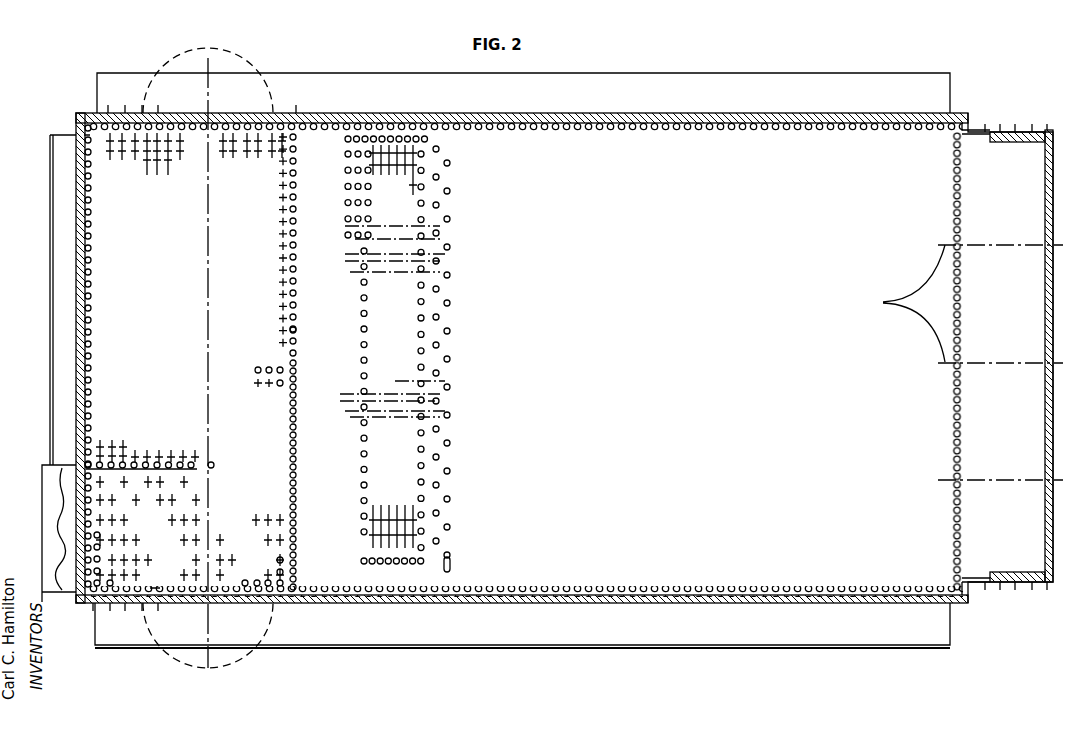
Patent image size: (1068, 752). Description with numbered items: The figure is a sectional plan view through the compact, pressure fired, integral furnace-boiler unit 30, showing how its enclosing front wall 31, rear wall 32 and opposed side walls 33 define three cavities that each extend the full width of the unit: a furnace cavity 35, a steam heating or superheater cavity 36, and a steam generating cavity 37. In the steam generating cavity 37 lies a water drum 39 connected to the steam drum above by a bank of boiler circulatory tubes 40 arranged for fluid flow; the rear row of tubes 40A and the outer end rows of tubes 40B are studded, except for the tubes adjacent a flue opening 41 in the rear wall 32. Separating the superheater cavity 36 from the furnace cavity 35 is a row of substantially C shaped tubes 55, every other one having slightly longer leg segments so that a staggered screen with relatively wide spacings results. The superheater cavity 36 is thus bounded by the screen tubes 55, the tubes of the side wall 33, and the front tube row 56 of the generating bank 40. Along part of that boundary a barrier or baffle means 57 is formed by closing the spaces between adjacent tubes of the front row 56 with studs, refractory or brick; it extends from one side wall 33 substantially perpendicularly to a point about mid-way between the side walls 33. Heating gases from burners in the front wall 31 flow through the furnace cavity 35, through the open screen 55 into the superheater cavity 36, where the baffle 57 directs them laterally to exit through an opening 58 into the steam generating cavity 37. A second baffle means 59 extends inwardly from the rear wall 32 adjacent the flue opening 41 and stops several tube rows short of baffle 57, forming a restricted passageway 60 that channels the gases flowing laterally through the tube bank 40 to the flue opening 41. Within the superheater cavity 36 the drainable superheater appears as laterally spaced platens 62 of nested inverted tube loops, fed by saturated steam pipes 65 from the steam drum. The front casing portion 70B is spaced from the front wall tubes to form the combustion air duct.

The integral furnace-boiler unit 30 is at (607, 652).
The front wall 31 is at (960, 414).
The rear wall 32 is at (77, 379).
The side walls 33 is at (680, 112).
The furnace cavity 35 is at (856, 362).
The steam heating cavity 36 is at (377, 361).
The steam generating cavity 37 is at (184, 357).
The water drum 39 is at (228, 650).
The bank of boiler circulatory tubes 40 is at (175, 525).
The rear row of tubes 40A is at (88, 318).
The outer end rows of tubes 40B is at (82, 137).
The flue opening 41 is at (75, 560).
The C shaped tubes 55 is at (452, 254).
The front tube row 56 is at (294, 330).
The barrier or baffle means 57 is at (297, 480).
The opening 58 is at (297, 258).
The second baffle means 59 is at (197, 470).
The restricted passageway 60 is at (171, 475).
The platens 62 is at (422, 322).
The saturated steam pipes 65 is at (350, 186).
The front casing portion 70B is at (1050, 430).